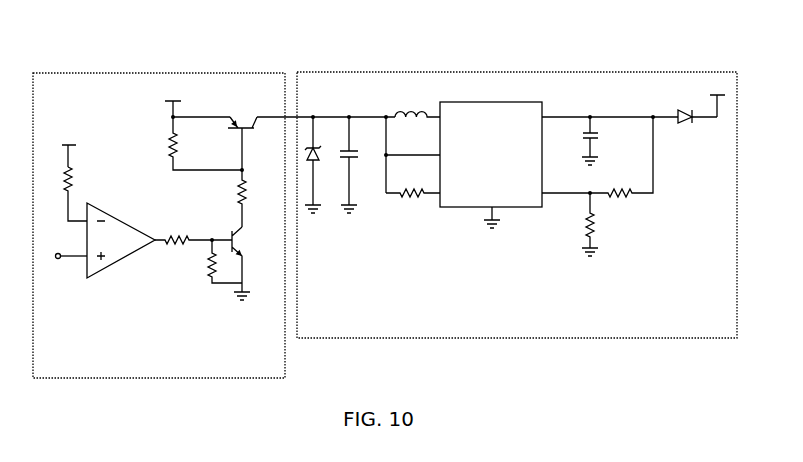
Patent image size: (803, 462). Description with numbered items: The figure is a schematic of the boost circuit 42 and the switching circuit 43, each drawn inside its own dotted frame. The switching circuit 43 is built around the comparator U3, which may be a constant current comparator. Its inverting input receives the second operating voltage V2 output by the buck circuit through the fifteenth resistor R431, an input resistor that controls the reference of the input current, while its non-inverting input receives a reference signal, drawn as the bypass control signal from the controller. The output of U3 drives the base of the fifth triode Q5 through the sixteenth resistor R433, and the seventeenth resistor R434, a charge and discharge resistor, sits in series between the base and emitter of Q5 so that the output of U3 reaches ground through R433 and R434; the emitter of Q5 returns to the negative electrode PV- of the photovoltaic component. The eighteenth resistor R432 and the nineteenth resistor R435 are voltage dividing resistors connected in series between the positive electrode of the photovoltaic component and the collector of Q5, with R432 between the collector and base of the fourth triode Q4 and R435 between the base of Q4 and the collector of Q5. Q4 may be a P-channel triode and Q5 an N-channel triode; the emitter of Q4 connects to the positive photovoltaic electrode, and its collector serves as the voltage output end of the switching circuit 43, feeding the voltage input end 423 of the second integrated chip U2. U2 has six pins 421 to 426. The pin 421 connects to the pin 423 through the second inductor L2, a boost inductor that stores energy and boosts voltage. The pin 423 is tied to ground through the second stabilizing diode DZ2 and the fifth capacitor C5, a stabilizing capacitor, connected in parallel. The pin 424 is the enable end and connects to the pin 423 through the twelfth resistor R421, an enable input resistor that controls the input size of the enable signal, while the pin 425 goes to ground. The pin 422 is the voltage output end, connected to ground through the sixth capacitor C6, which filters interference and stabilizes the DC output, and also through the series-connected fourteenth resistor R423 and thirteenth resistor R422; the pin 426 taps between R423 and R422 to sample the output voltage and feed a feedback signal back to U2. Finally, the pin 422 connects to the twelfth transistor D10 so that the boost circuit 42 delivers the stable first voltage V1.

The boost circuit 42 is at (517, 205).
The switching circuit 43 is at (214, 225).
The pin 421 is at (461, 121).
The voltage output end 422 is at (524, 121).
The voltage input end 423 is at (461, 157).
The enable end 424 is at (461, 192).
The pin 425 is at (494, 211).
The pin 426 is at (524, 190).
The second integrated chip U2 is at (491, 165).
The comparator U3 is at (106, 240).
The fourth triode Q4 is at (243, 131).
The fifth triode Q5 is at (251, 255).
The twelfth resistor R421 is at (413, 202).
The thirteenth resistor R422 is at (612, 224).
The fourteenth resistor R423 is at (597, 157).
The fifteenth resistor R431 is at (90, 194).
The eighteenth resistor R432 is at (205, 143).
The sixteenth resistor R433 is at (193, 233).
The seventeenth resistor R434 is at (202, 261).
The nineteenth resistor R435 is at (219, 198).
The fifth capacitor C5 is at (360, 165).
The sixth capacitor C6 is at (603, 141).
The second inductor L2 is at (417, 106).
The twelfth transistor D10 is at (690, 107).
The second stabilizing diode DZ2 is at (321, 165).
The first voltage V1 is at (715, 97).
The second operating voltage V2 is at (67, 146).
The negative electrode of the photovoltaic component PV- is at (249, 305).